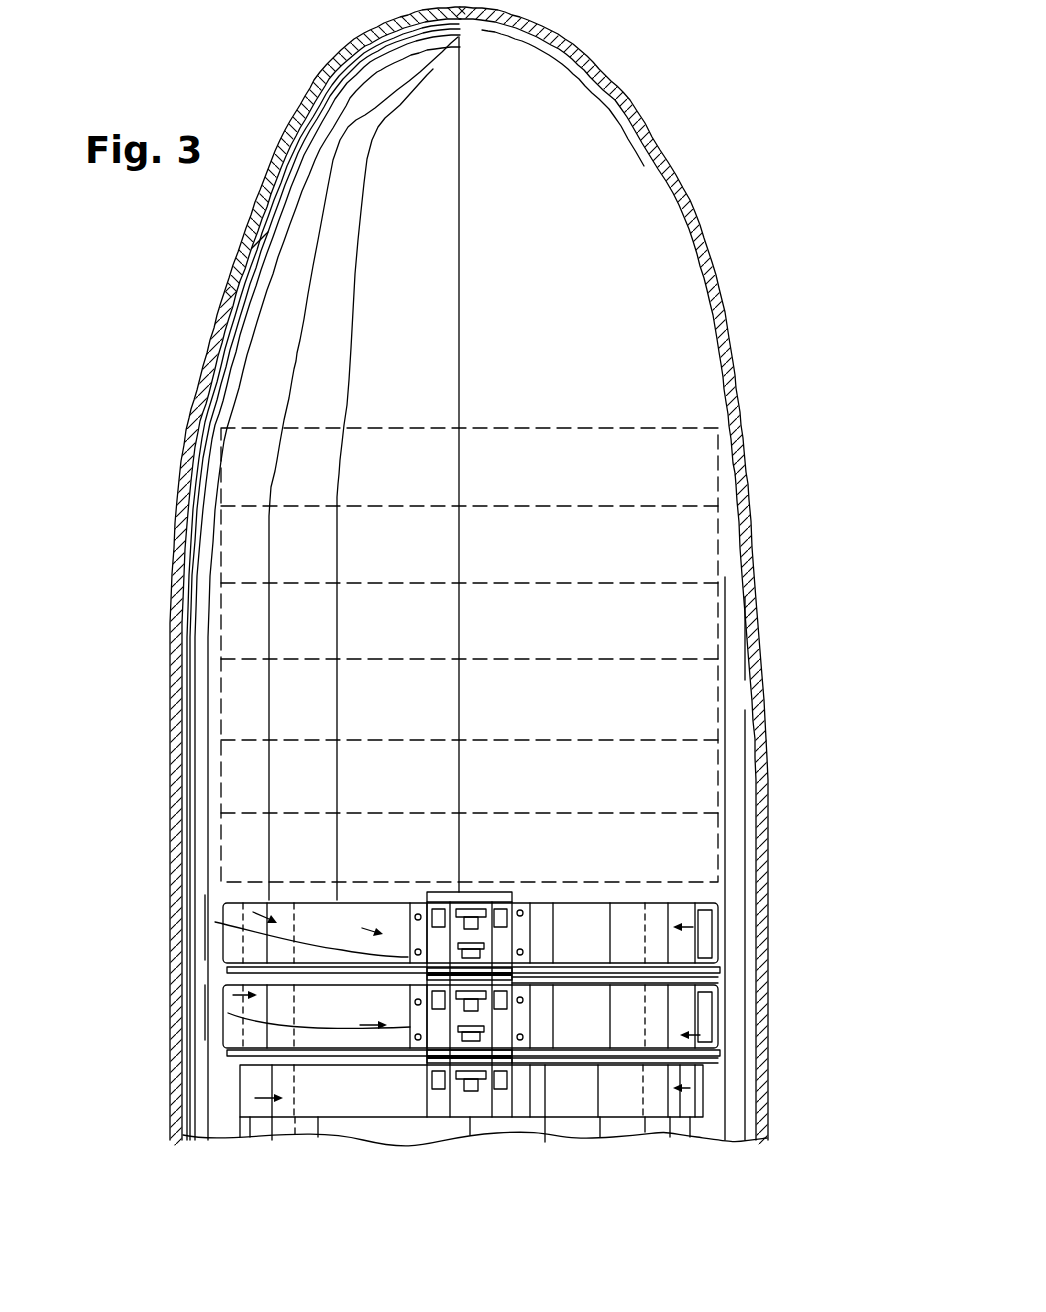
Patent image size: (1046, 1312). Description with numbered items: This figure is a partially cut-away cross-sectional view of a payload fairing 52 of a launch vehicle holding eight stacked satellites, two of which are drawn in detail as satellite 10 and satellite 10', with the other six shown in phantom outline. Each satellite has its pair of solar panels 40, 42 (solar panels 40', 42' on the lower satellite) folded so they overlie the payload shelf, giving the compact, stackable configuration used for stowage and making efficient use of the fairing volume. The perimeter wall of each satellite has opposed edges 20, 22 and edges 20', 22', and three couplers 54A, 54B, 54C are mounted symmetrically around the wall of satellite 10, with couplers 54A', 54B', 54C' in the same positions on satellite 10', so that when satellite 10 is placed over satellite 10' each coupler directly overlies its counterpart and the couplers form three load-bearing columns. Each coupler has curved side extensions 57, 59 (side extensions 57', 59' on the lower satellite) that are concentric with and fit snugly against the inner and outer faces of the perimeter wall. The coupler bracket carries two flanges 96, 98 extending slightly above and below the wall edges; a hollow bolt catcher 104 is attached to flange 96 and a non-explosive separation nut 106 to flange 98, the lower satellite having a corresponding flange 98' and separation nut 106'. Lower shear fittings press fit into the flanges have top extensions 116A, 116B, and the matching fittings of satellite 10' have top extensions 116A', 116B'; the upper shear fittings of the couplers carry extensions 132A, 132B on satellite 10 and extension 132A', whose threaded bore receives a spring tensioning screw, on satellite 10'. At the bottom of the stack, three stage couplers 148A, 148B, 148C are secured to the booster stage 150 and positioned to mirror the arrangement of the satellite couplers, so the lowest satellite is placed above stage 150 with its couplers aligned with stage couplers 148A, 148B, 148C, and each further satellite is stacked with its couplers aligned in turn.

The satellite 10 is at (396, 907).
The satellite 10' is at (417, 1035).
The edge 20 is at (693, 962).
The edge 20' is at (677, 1054).
The edge 22 is at (713, 905).
The edge 22' is at (692, 1010).
The solar panel 40 is at (157, 919).
The solar panel 40' is at (165, 1043).
The solar panel 42 is at (233, 836).
The solar panel 42' is at (244, 989).
The payload fairing 52 is at (628, 98).
The coupler 54A is at (167, 779).
The coupler 54A' is at (164, 1009).
The coupler 54B is at (139, 851).
The coupler 54B' is at (147, 981).
The coupler 54C is at (765, 916).
The coupler 54C' is at (791, 1050).
The curved side extension 57 is at (215, 746).
The curved side extension 57' is at (223, 1003).
The curved side extension 59 is at (701, 890).
The curved side extension 59' is at (702, 1016).
The flange 96 is at (515, 895).
The flange 98 is at (786, 951).
The flange 98' is at (701, 1091).
The bolt catcher 104 is at (520, 900).
The non-explosive separation nut 106 is at (635, 975).
The non-explosive separation nut 106' is at (432, 1144).
The top extension 116A is at (162, 867).
The top extension 116A' is at (179, 1021).
The top extension 116B is at (803, 920).
The top extension 116B' is at (792, 1016).
The extension 132A is at (282, 801).
The extension 132A' is at (301, 979).
The extension 132B is at (522, 910).
The stage coupler 148A is at (482, 1095).
The stage coupler 148B is at (262, 1100).
The stage coupler 148C is at (690, 1088).
The booster stage 150 is at (318, 1100).